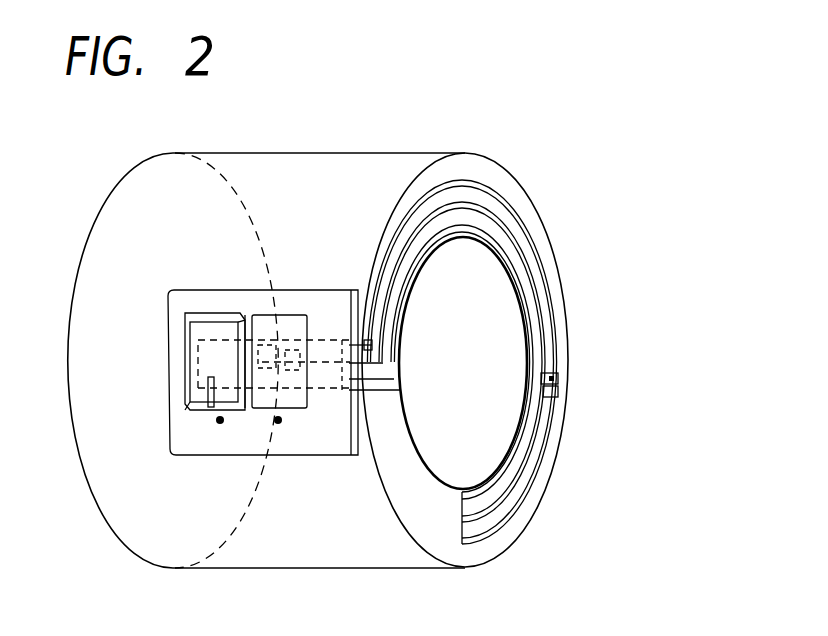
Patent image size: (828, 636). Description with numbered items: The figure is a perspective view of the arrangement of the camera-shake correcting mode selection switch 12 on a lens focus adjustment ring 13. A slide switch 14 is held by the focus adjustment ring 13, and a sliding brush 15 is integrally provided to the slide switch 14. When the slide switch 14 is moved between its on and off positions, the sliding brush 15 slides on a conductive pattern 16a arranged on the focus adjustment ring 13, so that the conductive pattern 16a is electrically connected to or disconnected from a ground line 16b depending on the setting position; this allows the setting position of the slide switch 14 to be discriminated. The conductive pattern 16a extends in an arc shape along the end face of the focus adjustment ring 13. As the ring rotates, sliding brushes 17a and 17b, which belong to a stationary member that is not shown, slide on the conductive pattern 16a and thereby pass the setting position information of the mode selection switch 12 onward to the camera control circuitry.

The camera-shake correcting mode selection switch 12 is at (314, 218).
The focus adjustment ring 13 is at (264, 178).
The slide switch 14 is at (188, 383).
The sliding brush 15 is at (288, 380).
The conductive pattern 16a is at (330, 378).
The ground line 16b is at (328, 345).
The sliding brush 17a is at (552, 397).
The sliding brush 17b is at (560, 380).